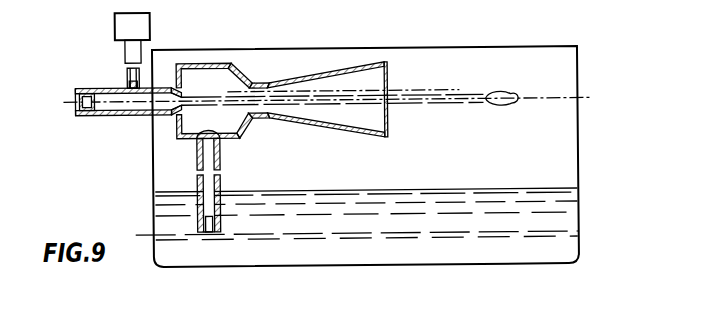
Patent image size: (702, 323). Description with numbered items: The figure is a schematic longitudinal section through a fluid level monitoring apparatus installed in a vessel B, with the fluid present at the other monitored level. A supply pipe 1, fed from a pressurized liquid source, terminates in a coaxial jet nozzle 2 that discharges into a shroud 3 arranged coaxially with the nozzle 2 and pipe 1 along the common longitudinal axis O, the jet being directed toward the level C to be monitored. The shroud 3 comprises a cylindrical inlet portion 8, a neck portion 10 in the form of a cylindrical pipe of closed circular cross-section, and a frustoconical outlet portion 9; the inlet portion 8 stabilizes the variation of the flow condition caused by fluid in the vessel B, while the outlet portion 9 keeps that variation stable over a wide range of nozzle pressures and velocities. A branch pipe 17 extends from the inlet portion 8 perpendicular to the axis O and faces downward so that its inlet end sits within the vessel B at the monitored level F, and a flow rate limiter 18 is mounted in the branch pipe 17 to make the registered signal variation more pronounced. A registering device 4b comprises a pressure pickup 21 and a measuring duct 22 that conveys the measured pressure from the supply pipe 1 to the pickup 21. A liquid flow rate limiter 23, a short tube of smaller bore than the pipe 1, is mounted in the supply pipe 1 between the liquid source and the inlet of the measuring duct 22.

The supply pipe 1 is at (100, 113).
The jet nozzle 2 is at (174, 112).
The shroud 3 is at (176, 143).
The registering device 4b is at (153, 32).
The inlet portion 8 is at (236, 119).
The outlet portion 9 is at (332, 125).
The neck portion 10 is at (267, 115).
The branch pipe 17 is at (197, 163).
The flow rate limiter 18 is at (222, 202).
The pressure pickup 21 is at (122, 24).
The measuring duct 22 is at (130, 80).
The liquid flow rate limiter 23 is at (94, 86).
The vessel B is at (581, 221).
The level C— C is at (349, 88).
The monitored level F— F is at (348, 216).
The longitudinal axis O— O is at (330, 101).